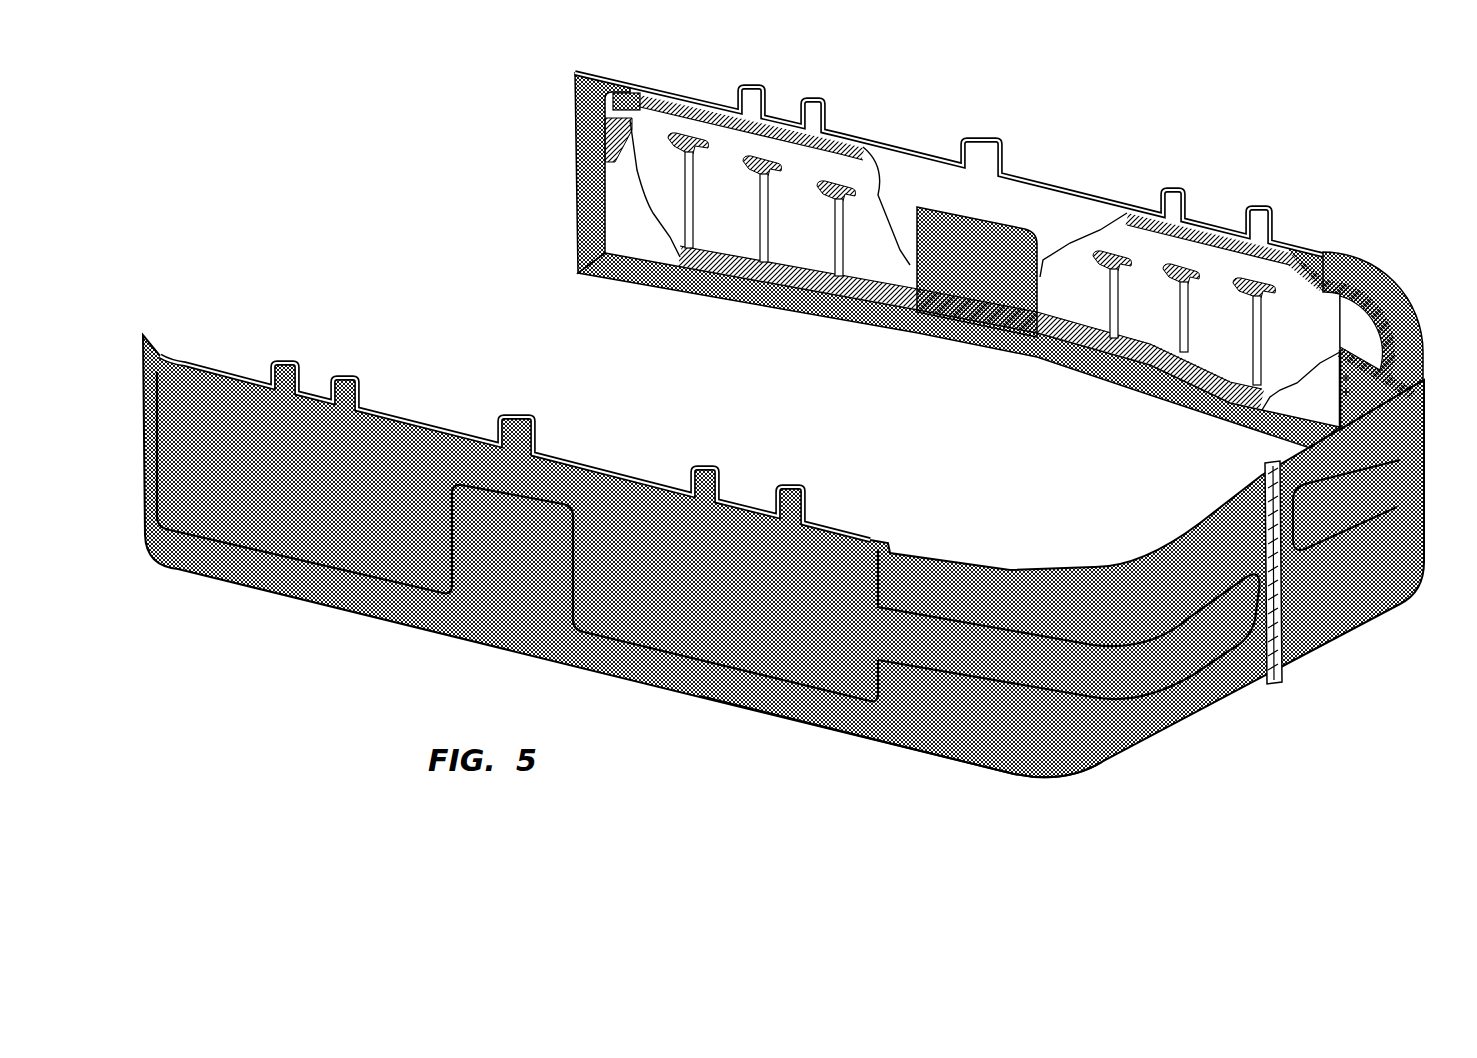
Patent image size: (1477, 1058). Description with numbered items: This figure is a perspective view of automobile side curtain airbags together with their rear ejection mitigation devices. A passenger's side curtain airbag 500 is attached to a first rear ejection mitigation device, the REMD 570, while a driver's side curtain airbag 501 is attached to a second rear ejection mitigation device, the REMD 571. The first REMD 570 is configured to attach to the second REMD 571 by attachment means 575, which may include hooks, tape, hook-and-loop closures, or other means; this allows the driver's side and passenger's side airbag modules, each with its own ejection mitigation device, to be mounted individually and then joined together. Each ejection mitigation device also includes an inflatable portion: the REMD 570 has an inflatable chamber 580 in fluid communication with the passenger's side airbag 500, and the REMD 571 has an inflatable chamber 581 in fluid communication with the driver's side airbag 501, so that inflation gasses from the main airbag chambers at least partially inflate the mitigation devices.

The passenger's side curtain airbag 500 is at (1220, 317).
The driver's side curtain airbag 501 is at (613, 512).
The rear ejection mitigation device 570 is at (1417, 557).
The rear ejection mitigation device 571 is at (1000, 747).
The attachment means 575 is at (1285, 678).
The inflatable chamber 580 is at (1393, 306).
The inflatable chamber 581 is at (1088, 647).